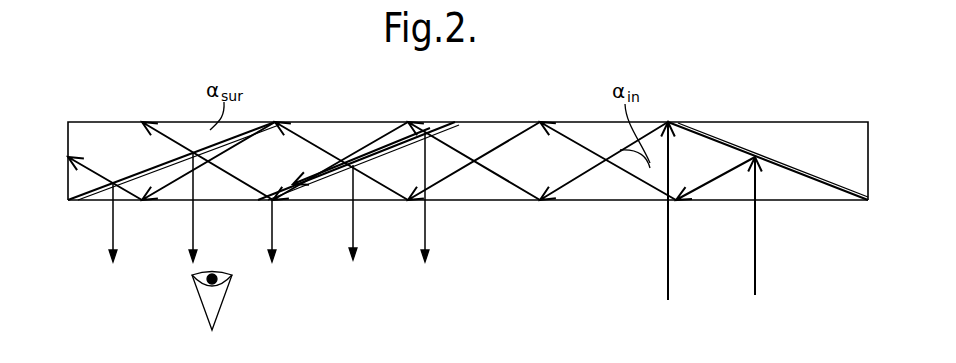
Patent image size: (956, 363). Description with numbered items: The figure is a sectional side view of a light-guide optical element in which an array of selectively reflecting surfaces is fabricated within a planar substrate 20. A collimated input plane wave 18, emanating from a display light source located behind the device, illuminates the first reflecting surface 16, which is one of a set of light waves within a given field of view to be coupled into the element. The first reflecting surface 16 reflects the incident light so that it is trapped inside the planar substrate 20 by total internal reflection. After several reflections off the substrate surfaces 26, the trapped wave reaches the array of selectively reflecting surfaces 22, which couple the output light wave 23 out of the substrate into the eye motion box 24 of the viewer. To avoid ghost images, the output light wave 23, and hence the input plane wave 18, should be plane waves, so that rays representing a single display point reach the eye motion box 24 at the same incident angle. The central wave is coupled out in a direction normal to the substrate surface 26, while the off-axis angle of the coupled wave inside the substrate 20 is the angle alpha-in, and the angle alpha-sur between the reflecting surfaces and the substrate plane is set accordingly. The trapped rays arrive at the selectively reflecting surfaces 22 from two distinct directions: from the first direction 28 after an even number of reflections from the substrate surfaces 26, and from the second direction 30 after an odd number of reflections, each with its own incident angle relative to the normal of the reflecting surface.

The first reflecting surface 16 is at (812, 172).
The collimated input plane wave 18 is at (755, 238).
The planar substrate 20 is at (772, 128).
The selectively reflecting surfaces 22 is at (142, 168).
The output light wave 23 is at (272, 223).
The EMB of a viewer 24 is at (227, 298).
The substrate surface 26 is at (458, 202).
The first direction of trapped rays 28 is at (536, 121).
The second direction of trapped rays 30 is at (645, 182).